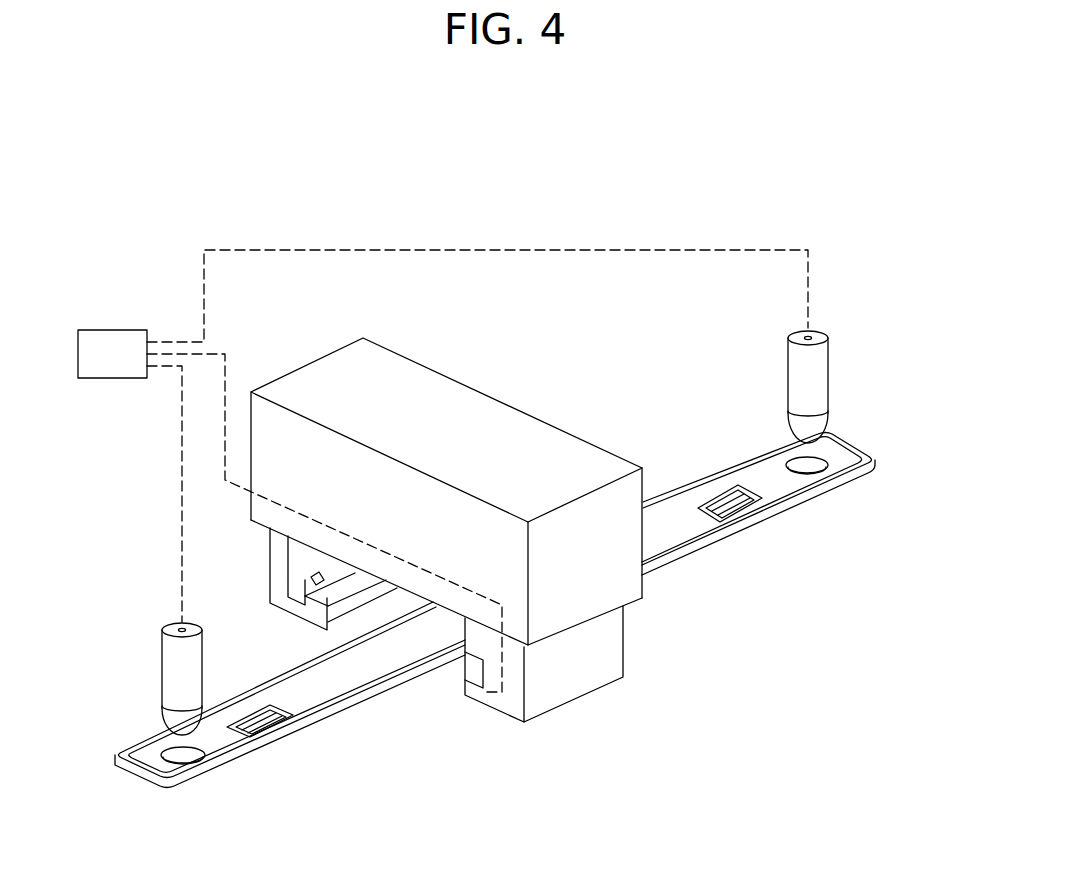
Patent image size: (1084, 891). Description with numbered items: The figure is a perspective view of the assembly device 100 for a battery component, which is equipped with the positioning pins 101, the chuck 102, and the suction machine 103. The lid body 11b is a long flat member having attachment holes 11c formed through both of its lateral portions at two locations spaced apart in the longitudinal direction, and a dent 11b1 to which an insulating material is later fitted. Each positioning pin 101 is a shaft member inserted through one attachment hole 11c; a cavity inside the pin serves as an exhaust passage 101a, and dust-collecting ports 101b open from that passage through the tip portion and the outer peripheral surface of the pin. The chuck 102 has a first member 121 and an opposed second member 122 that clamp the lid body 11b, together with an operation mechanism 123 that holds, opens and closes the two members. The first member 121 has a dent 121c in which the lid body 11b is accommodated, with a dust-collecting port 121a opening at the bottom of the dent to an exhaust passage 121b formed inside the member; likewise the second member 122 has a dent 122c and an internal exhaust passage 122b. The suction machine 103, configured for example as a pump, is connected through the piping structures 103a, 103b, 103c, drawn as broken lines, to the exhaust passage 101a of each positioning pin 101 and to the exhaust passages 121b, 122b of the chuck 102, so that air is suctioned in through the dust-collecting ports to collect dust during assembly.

The assembly device 100 is at (280, 190).
The positioning pin 101 is at (848, 372).
The exhaust passage 101a is at (812, 336).
The dust-collecting port 101b is at (792, 425).
The chuck 102 is at (640, 648).
The suction machine 103 is at (122, 330).
The piping structure 103a is at (180, 434).
The piping structure 103b is at (382, 248).
The piping structure 103c is at (232, 352).
The lid body 11b is at (371, 713).
The dent 11b1 is at (748, 492).
The attachment hole 11c is at (832, 462).
The first member 121 is at (272, 583).
The dust-collecting port 121a is at (400, 585).
The exhaust passage 121b is at (300, 578).
The dent 121c is at (318, 575).
The second member 122 is at (537, 705).
The exhaust passage 122b is at (503, 677).
The dent 122c is at (458, 678).
The operation mechanism 123 is at (645, 590).